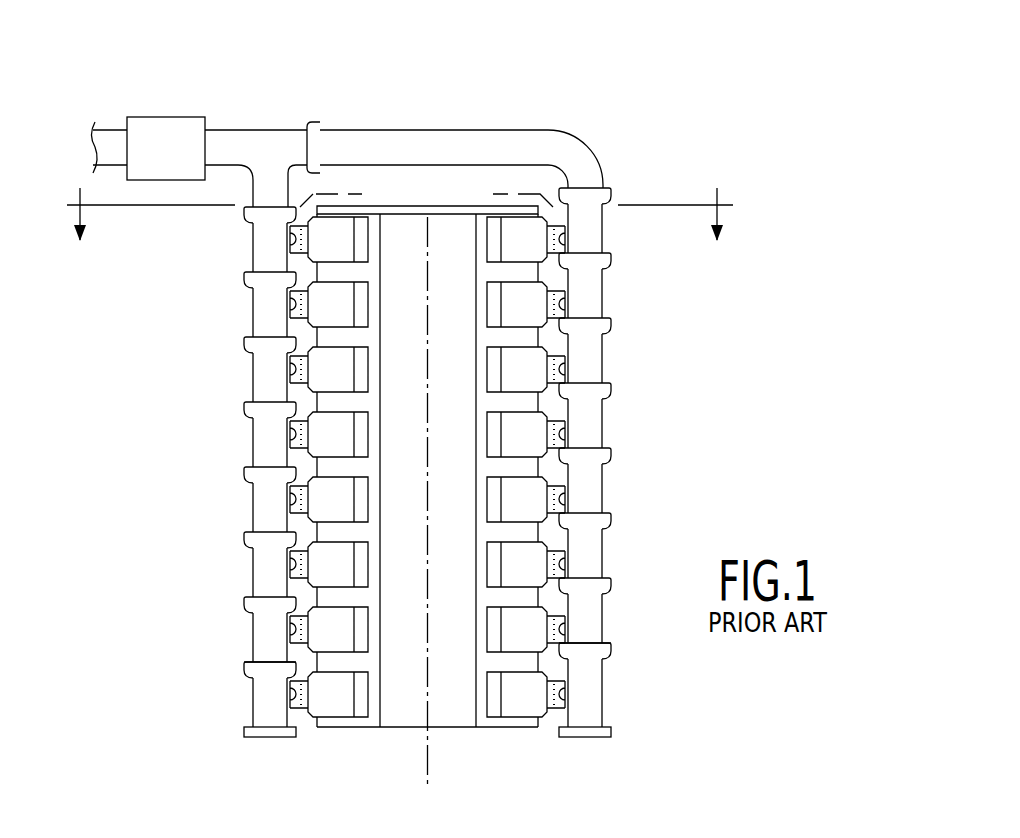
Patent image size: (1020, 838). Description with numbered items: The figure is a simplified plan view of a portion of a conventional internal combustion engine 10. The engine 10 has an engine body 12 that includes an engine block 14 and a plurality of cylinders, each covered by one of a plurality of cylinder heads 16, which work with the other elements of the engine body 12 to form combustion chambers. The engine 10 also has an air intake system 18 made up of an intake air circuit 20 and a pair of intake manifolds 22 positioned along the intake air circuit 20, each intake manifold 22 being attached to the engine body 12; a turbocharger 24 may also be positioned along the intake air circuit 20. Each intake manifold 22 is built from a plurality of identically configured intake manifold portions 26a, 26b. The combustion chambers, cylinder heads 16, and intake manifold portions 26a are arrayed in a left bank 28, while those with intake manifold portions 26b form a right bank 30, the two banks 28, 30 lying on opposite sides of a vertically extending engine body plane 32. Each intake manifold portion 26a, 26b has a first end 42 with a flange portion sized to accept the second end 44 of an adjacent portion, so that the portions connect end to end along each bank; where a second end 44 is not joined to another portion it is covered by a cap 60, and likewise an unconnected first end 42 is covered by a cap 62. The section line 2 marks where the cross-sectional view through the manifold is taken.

The internal combustion engine 10 is at (668, 98).
The engine body 12 is at (443, 730).
The engine block 14 is at (393, 727).
The cylinder heads 16 is at (327, 435).
The air intake system 18 is at (222, 110).
The intake air circuit 20 is at (447, 128).
The intake manifolds 22 is at (252, 257).
The turbocharger 24 is at (180, 162).
The intake manifold portions 26a is at (253, 370).
The intake manifold portions 26b is at (602, 367).
The left bank 28 is at (383, 382).
The right bank 30 is at (470, 557).
The engine body plane 32 is at (427, 768).
The first end 42 is at (252, 727).
The second end 44 is at (610, 727).
The cap 60 is at (243, 730).
The cap 62 is at (600, 737).
The section line 2- 2 is at (400, 206).